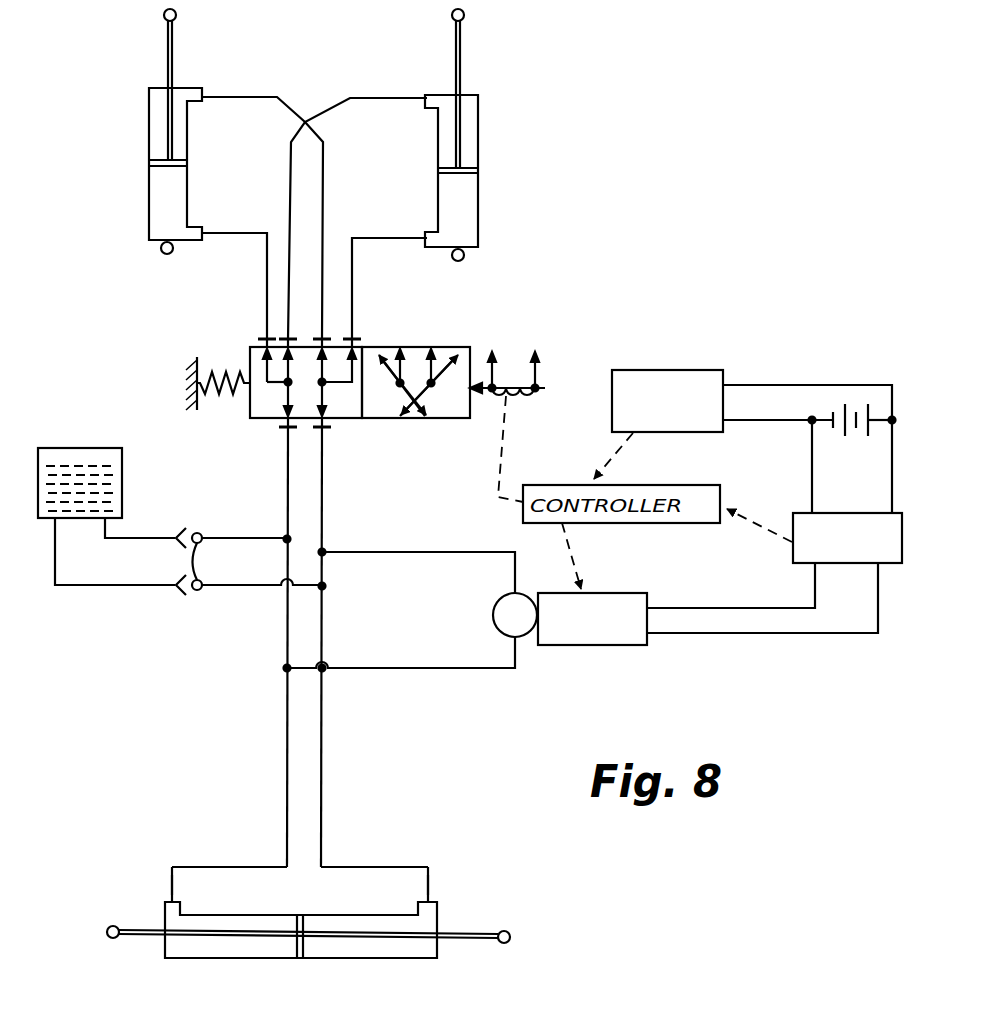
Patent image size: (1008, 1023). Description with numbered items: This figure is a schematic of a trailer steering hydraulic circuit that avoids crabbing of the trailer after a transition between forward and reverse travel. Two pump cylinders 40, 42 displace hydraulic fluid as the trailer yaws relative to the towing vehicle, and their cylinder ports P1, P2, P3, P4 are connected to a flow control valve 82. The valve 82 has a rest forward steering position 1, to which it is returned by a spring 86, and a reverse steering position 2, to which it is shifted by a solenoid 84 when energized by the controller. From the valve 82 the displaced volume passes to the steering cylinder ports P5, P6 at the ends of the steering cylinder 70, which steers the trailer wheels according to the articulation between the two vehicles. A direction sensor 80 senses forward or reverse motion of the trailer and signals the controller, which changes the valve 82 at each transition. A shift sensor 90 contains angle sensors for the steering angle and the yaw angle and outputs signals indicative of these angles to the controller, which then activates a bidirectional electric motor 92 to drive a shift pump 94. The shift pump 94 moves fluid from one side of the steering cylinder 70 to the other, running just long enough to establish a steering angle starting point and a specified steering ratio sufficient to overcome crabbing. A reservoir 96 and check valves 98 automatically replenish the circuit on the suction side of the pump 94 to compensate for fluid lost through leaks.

The forward steering position 1 is at (258, 407).
The reverse steering position 2 is at (376, 419).
The pump cylinder 40 is at (480, 135).
The pump cylinder 42 is at (149, 110).
The steering cylinder 70 is at (335, 959).
The direction sensor 80 is at (642, 416).
The flow control valve 82 is at (432, 322).
The solenoid 84 is at (507, 388).
The spring 86 is at (216, 372).
The shift sensor 90 is at (830, 556).
The bidirectional electric motor 92 is at (576, 636).
The shift pump 94 is at (494, 611).
The reservoir 96 is at (95, 448).
The check valves 98 is at (182, 558).
The cylinder port P1 is at (248, 96).
The cylinder port P2 is at (243, 232).
The cylinder port P3 is at (404, 97).
The cylinder port P4 is at (410, 237).
The steering cylinder port P5 is at (172, 882).
The steering cylinder port P6 is at (429, 884).